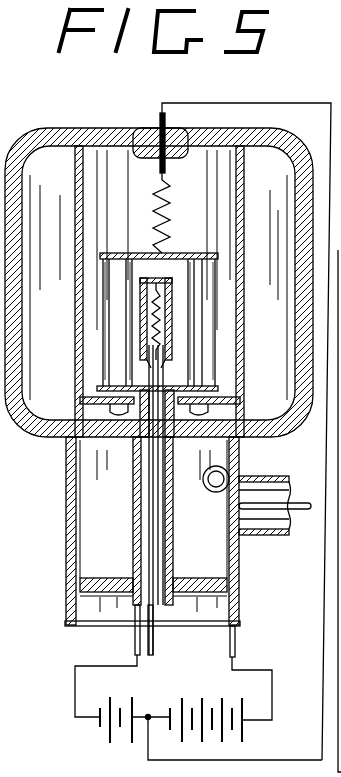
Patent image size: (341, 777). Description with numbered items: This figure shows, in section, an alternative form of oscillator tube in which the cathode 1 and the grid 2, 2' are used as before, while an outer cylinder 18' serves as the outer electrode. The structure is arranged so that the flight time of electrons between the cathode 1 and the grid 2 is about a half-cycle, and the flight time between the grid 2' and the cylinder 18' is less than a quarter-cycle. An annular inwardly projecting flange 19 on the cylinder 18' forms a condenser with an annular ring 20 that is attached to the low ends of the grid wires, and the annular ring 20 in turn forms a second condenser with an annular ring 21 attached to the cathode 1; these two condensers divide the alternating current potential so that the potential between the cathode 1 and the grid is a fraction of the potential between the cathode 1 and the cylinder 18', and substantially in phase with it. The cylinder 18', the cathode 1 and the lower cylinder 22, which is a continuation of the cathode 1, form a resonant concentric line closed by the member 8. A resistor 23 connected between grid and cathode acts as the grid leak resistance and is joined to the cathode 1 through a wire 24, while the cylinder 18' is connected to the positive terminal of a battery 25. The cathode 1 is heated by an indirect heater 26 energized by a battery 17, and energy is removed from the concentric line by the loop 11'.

The cathode 1 is at (157, 314).
The grid 2 is at (166, 291).
The grid 2' is at (159, 310).
The closing member 8 is at (188, 600).
The loop 11' is at (245, 500).
The battery 17 is at (111, 742).
The cylinder 18' is at (159, 282).
The annular inwardly projecting flange 19 is at (236, 407).
The annular ring 20 is at (236, 390).
The annular ring 21 is at (124, 448).
The lower cylinder 22 is at (135, 517).
The resistor 23 is at (170, 202).
The wire 24 is at (221, 101).
The battery 25 is at (202, 700).
The indirect heater 26 is at (141, 290).